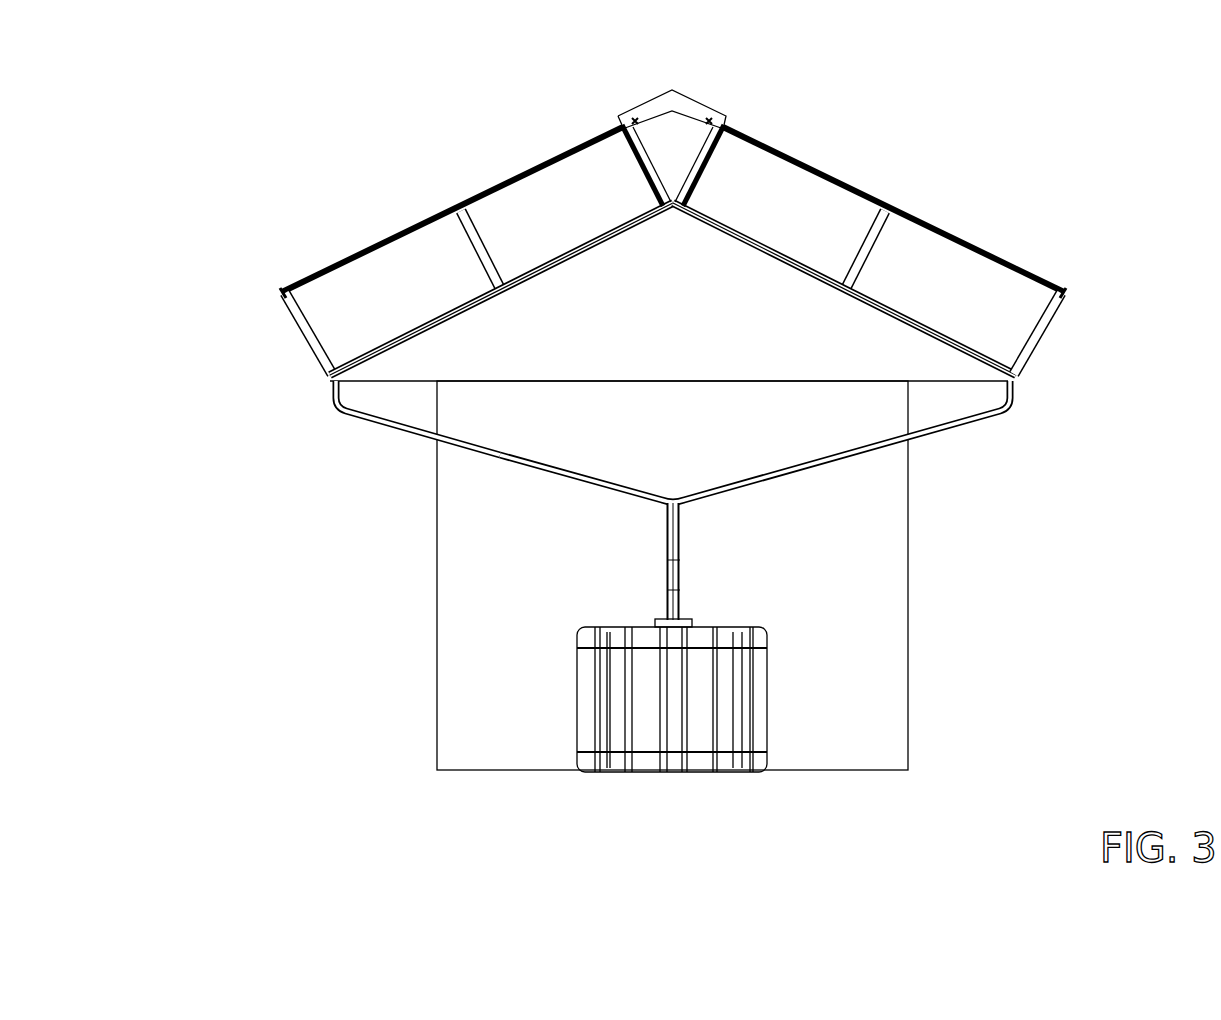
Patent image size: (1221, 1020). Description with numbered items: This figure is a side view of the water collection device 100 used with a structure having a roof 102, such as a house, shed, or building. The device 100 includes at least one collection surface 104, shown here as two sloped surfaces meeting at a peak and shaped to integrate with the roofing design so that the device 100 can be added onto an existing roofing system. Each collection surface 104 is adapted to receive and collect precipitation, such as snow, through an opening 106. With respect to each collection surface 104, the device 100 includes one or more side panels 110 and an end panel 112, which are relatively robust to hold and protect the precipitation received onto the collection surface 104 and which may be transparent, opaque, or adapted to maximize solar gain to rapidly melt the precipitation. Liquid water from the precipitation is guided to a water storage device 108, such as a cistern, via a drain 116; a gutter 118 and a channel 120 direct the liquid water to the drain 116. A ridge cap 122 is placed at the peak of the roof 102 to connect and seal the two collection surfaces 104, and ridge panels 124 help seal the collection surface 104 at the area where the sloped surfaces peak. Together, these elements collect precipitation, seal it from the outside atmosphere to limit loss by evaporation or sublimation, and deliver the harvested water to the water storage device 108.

The water collection device 100 is at (166, 336).
The roof 102 is at (806, 348).
The collection surface 104 is at (997, 295).
The opening 106 is at (784, 193).
The water storage device 108 is at (577, 697).
The side panel 110 is at (388, 288).
The end panel 112 is at (297, 322).
The drain 116 is at (740, 500).
The gutter 118 is at (330, 378).
The channel 120 is at (445, 312).
The ridge cap 122 is at (645, 100).
The ridge panel 124 is at (677, 155).